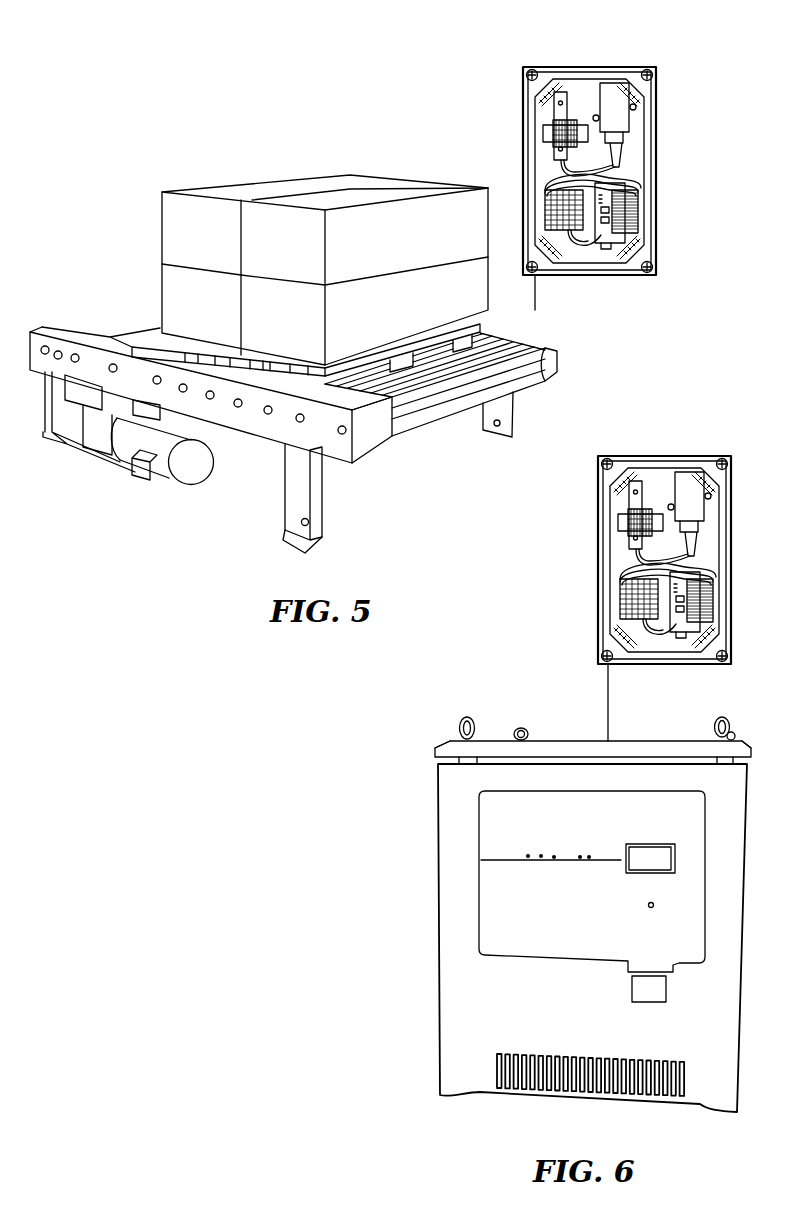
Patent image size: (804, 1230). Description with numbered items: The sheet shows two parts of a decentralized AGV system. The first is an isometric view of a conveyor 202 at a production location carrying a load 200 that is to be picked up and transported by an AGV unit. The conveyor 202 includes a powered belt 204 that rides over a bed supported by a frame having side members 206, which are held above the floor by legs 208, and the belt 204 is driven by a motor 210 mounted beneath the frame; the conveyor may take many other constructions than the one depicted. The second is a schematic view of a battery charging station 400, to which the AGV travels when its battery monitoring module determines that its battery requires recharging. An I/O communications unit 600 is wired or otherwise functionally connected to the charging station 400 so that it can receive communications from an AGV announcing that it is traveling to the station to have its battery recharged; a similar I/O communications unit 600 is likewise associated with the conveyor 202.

In FIG. 5, the load 200 is at (233, 185).
In FIG. 5, the conveyor 202 is at (57, 323).
In FIG. 5, the powered belt 204 is at (452, 412).
In FIG. 5, the side members 206 is at (342, 453).
In FIG. 5, the legs 208 is at (308, 505).
In FIG. 5, the motor 210 is at (188, 470).
In FIG. 5, the I/O communications unit 600 is at (616, 66).
In FIG. 6, the I/O communications unit 600 is at (690, 454).
In FIG. 6, the battery charging station 400 is at (407, 856).